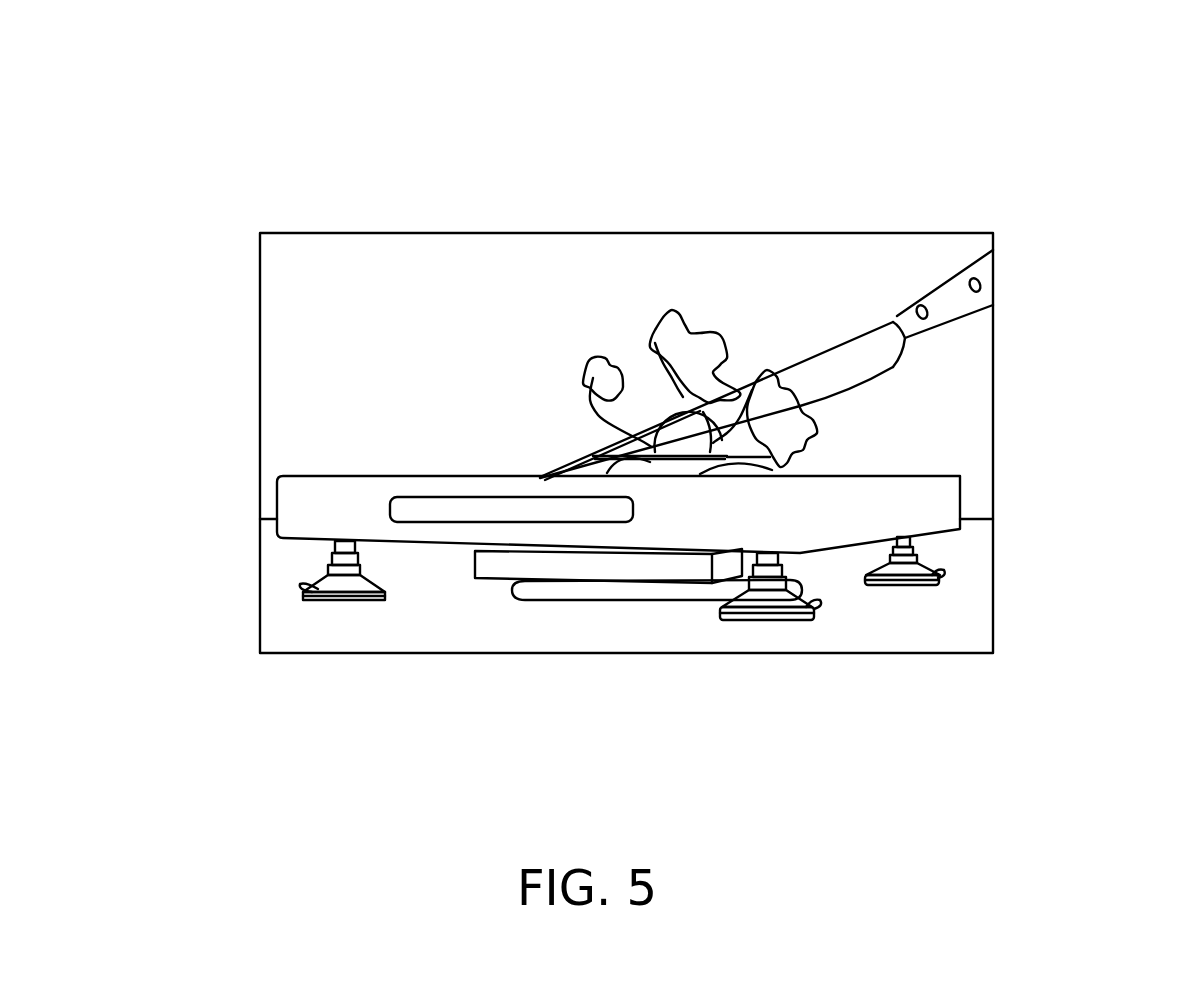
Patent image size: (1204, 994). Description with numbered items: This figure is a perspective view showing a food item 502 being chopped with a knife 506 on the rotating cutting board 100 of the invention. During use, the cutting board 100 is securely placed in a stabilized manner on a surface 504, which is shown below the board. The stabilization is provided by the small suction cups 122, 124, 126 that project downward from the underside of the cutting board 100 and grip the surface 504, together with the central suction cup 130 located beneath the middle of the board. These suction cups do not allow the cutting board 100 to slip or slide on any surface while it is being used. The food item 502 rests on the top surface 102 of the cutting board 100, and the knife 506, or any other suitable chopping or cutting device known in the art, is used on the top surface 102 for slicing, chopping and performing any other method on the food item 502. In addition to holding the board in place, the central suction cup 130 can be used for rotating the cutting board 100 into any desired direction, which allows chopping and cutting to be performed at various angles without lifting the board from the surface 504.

The cutting board 100 is at (950, 432).
The top surface 102 is at (333, 464).
The small suction cup 122 is at (300, 590).
The small suction cup 124 is at (773, 603).
The small suction cup 126 is at (925, 580).
The central suction cup 130 is at (587, 602).
The food item 502 is at (587, 380).
The surface 504 is at (447, 603).
The knife 506 is at (962, 303).